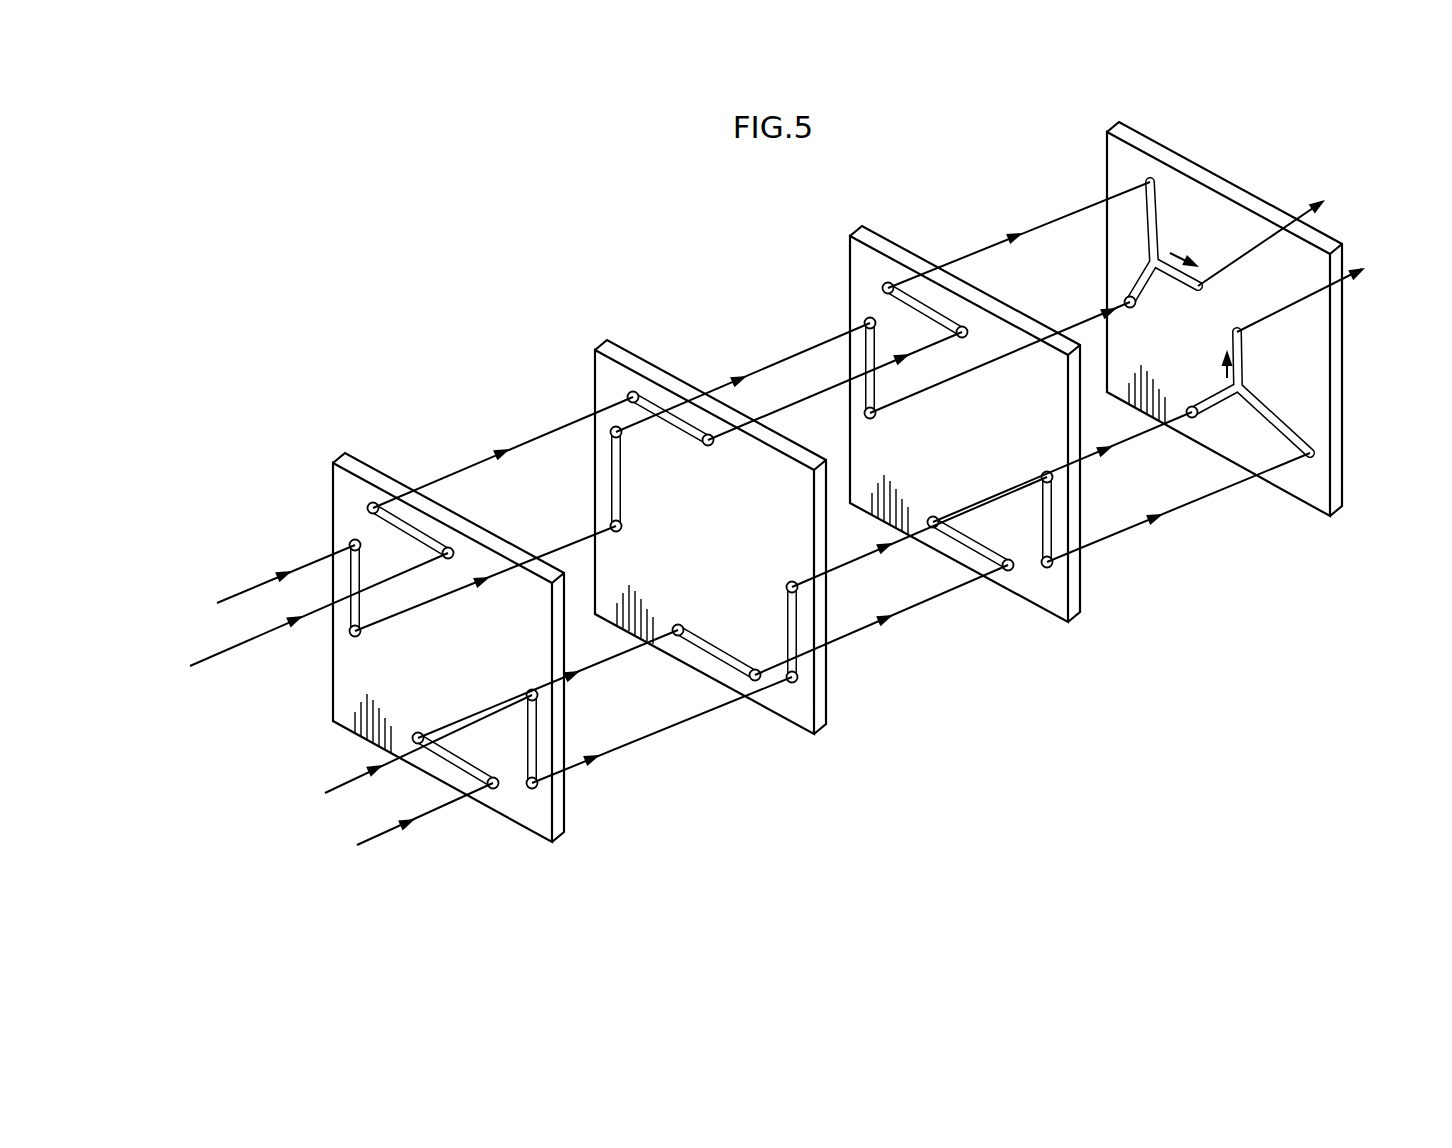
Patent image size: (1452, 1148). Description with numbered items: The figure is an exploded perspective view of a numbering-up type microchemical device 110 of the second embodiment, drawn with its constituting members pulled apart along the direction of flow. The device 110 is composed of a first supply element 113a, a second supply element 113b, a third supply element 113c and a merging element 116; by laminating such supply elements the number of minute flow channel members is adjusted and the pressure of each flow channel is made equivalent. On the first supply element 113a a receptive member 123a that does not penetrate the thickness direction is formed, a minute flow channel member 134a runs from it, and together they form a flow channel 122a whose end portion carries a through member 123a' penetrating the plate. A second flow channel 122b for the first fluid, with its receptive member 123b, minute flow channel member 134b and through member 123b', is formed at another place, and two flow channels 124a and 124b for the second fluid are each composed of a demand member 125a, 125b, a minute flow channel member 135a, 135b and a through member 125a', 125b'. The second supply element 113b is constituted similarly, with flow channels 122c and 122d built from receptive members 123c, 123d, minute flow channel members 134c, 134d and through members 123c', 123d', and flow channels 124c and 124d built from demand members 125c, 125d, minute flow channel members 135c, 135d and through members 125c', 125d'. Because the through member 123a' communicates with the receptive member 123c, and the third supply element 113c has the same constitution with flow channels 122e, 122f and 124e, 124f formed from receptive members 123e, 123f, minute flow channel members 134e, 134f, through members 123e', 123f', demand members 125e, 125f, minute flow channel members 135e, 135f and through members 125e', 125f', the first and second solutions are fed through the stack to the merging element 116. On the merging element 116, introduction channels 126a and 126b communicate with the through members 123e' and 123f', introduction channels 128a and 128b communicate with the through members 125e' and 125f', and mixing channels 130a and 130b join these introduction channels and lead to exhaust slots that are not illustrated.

The microchemical device 110 is at (396, 282).
The first supply element 113a is at (333, 676).
The second supply element 113b is at (597, 556).
The third supply element 113c is at (858, 236).
The merging element 116 is at (1107, 150).
The flow channel 122a is at (257, 552).
The receptive member 123a is at (299, 509).
The minute flow channel member 134a is at (353, 586).
The through member 123a' is at (300, 585).
The flow channel 124a is at (405, 456).
The demand member 125a is at (469, 479).
The minute flow channel member 135a is at (410, 526).
The through member 125a' is at (341, 456).
The flow channel 122b is at (440, 830).
The receptive member 123b is at (505, 830).
The minute flow channel member 134b is at (455, 764).
The through member 123b' is at (383, 808).
The flow channel 124b is at (632, 797).
The demand member 125b is at (592, 765).
The minute flow channel member 135b is at (534, 742).
The through member 125b' is at (596, 841).
The flow channel 122c is at (519, 410).
The receptive member 123c is at (558, 443).
The minute flow channel member 134c is at (614, 478).
The through member 123c' is at (557, 363).
The flow channel 124c is at (672, 344).
The demand member 125c is at (606, 346).
The minute flow channel member 135c is at (670, 415).
The through member 125c' is at (733, 368).
The flow channel 122d is at (716, 727).
The receptive member 123d is at (648, 705).
The minute flow channel member 134d is at (716, 657).
The through member 123d' is at (785, 727).
The flow channel 124d is at (898, 689).
The demand member 125d is at (859, 734).
The minute flow channel member 135d is at (794, 634).
The through member 125d' is at (861, 657).
The flow channel 122e is at (773, 297).
The receptive member 123e is at (811, 252).
The minute flow channel member 134e is at (868, 366).
The through member 123e' is at (811, 329).
The flow channel 124e is at (965, 235).
The demand member 125e is at (1009, 258).
The minute flow channel member 135e is at (927, 307).
The through member 125e' is at (905, 236).
The flow channel 122f is at (969, 618).
The receptive member 123f is at (1036, 617).
The minute flow channel member 134f is at (970, 548).
The through member 123f' is at (903, 596).
The flow channel 124f is at (1151, 559).
The demand member 125f is at (1111, 526).
The minute flow channel member 135f is at (1049, 523).
The through member 125f' is at (1114, 602).
The introduction channel 126a is at (1132, 297).
The introduction channel 126b is at (1222, 403).
The introduction channel 128a is at (1164, 216).
The introduction channel 128b is at (1306, 432).
The mixing channel 130a is at (1168, 248).
The mixing channel 130b is at (1242, 352).